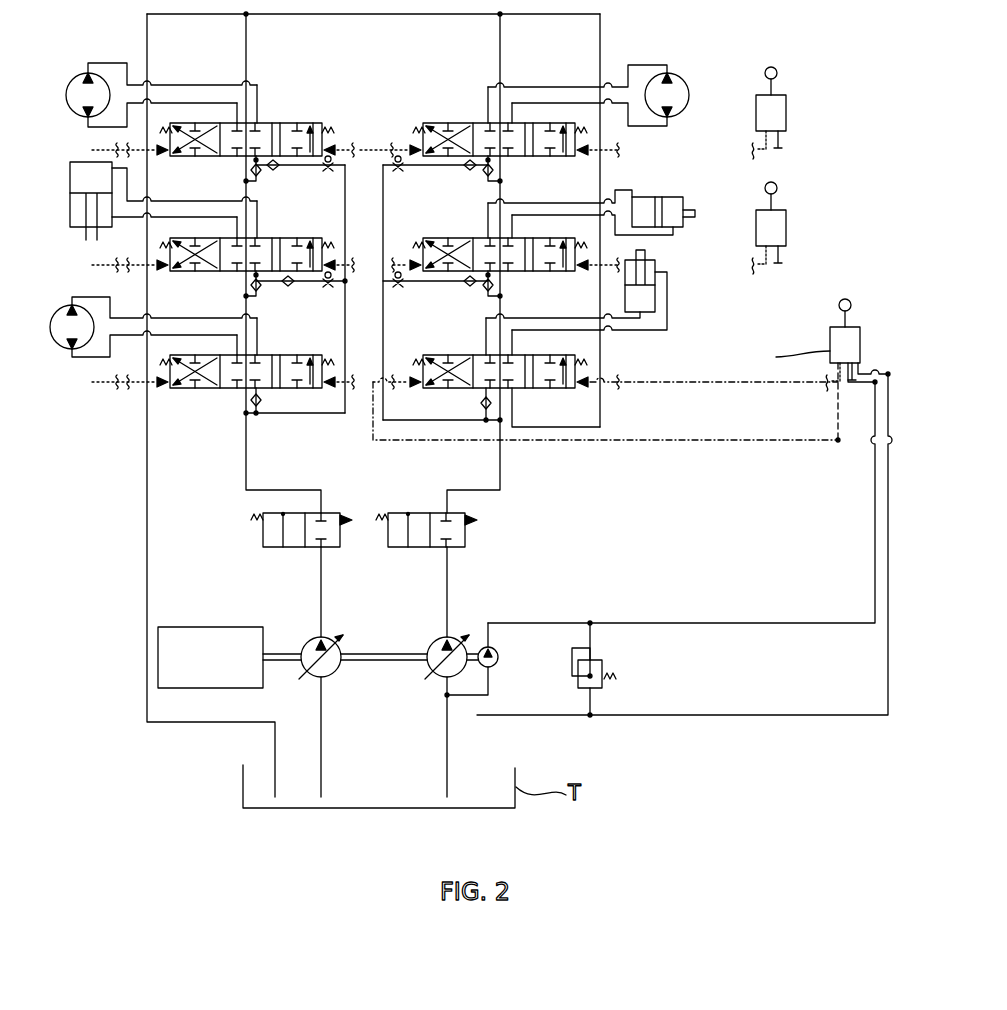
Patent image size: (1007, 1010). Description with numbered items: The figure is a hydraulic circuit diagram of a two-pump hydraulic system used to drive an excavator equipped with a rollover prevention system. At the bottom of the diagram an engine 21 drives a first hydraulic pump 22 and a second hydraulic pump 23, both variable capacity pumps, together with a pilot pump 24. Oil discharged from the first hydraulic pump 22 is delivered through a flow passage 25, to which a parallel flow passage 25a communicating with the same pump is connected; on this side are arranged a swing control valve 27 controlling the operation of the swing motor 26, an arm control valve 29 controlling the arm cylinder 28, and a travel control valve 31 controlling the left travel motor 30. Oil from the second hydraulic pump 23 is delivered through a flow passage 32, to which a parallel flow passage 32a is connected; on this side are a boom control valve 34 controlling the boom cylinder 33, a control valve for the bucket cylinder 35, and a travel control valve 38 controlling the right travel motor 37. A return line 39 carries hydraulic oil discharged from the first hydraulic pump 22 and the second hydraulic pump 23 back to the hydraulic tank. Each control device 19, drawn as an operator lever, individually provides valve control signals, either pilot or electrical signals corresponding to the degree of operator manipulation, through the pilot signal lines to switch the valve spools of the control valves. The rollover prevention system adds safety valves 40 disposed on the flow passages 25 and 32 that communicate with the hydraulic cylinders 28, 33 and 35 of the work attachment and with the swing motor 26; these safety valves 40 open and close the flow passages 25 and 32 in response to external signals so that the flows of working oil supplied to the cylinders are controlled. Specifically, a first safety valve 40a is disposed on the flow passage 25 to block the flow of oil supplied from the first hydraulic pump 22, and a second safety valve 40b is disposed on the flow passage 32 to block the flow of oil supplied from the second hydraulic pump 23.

The control device 19 is at (788, 108).
The engine 21 is at (205, 627).
The first hydraulic pump 22 is at (313, 682).
The second hydraulic pump 23 is at (435, 680).
The pilot pump 24 is at (500, 664).
The flow passage 25 is at (248, 472).
The parallel flow passage 25a is at (345, 415).
The swing motor 26 is at (69, 306).
The swing control valve 27 is at (293, 355).
The arm cylinder 28 is at (70, 206).
The arm control valve 29 is at (293, 238).
The left travel motor 30 is at (86, 74).
The travel control valve 31 is at (292, 123).
The flow passage 32 is at (502, 470).
The parallel flow passage 32a is at (443, 422).
The boom cylinder 33 is at (658, 270).
The boom control valve 34 is at (474, 349).
The bucket cylinder 35 is at (455, 232).
The right travel motor 37 is at (684, 79).
The travel control valve 38 is at (452, 112).
The return line 39 is at (161, 724).
The safety valves 40 is at (407, 608).
The first safety valve 40a is at (330, 548).
The second safety valve 40b is at (407, 548).